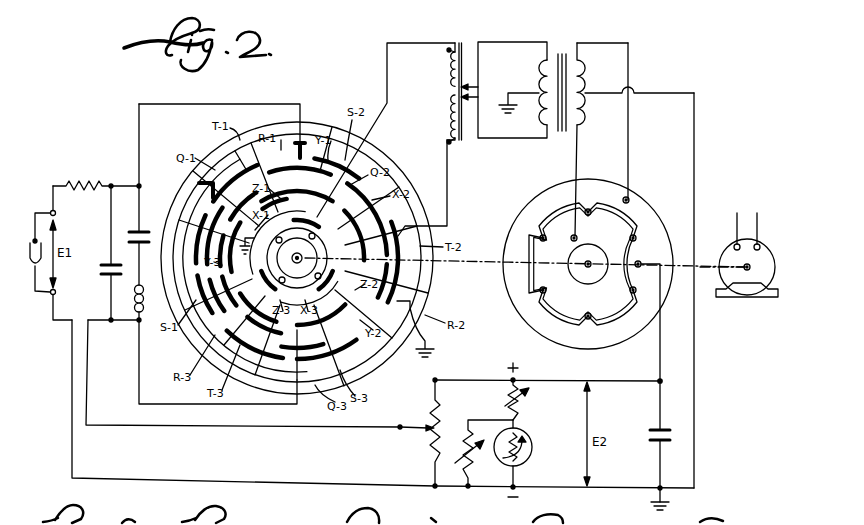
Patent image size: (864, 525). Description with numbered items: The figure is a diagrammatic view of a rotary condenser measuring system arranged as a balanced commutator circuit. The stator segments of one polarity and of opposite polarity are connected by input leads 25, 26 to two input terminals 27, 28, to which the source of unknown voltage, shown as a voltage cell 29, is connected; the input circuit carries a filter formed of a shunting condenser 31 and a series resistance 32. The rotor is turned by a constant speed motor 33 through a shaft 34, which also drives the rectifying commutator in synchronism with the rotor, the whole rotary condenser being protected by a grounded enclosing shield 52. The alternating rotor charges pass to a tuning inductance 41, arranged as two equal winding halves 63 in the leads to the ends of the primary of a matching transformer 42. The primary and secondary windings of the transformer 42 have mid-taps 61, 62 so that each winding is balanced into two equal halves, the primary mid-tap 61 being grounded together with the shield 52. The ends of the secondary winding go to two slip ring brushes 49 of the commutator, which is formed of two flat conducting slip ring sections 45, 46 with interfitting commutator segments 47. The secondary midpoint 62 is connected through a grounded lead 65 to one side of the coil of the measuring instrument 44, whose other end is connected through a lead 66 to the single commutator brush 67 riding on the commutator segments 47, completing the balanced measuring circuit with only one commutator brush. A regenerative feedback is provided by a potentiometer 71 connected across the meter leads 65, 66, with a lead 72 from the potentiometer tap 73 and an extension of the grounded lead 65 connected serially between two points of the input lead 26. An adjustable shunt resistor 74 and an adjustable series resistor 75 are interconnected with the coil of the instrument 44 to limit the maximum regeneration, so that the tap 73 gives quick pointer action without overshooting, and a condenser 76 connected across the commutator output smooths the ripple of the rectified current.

The input lead 25 is at (228, 104).
The input lead 26 is at (139, 404).
The input terminal 27 is at (56, 213).
The input terminal 28 is at (56, 292).
The voltage cell 29 is at (30, 262).
The condenser 31 is at (104, 265).
The resistance 32 is at (86, 181).
The constant speed motor 33 is at (762, 255).
The shaft 34 is at (706, 266).
The tuning inductance 41 is at (442, 100).
The matching transformer 42 is at (560, 52).
The measuring instrument 44 is at (527, 433).
The flat conducting slip ring section 45 is at (642, 196).
The flat conducting slip ring section 46 is at (603, 238).
The commutator segments 47 is at (577, 215).
The slip ring brushes 49 is at (629, 202).
The grounded enclosing shield 52 is at (436, 297).
The mid-tap of primary winding 61 is at (544, 86).
The mid-tap of secondary winding 62 is at (586, 91).
The winding halves 63 is at (461, 48).
The lead 65 is at (695, 372).
The lead 66 is at (660, 378).
The commutator brush 67 is at (641, 262).
The potentiometer 71 is at (439, 428).
The lead 72 is at (220, 427).
The potentiometer tap 73 is at (424, 433).
The adjustable shunt resistor 74 is at (465, 480).
The adjustable series resistor 75 is at (522, 405).
The condenser 76 is at (655, 428).